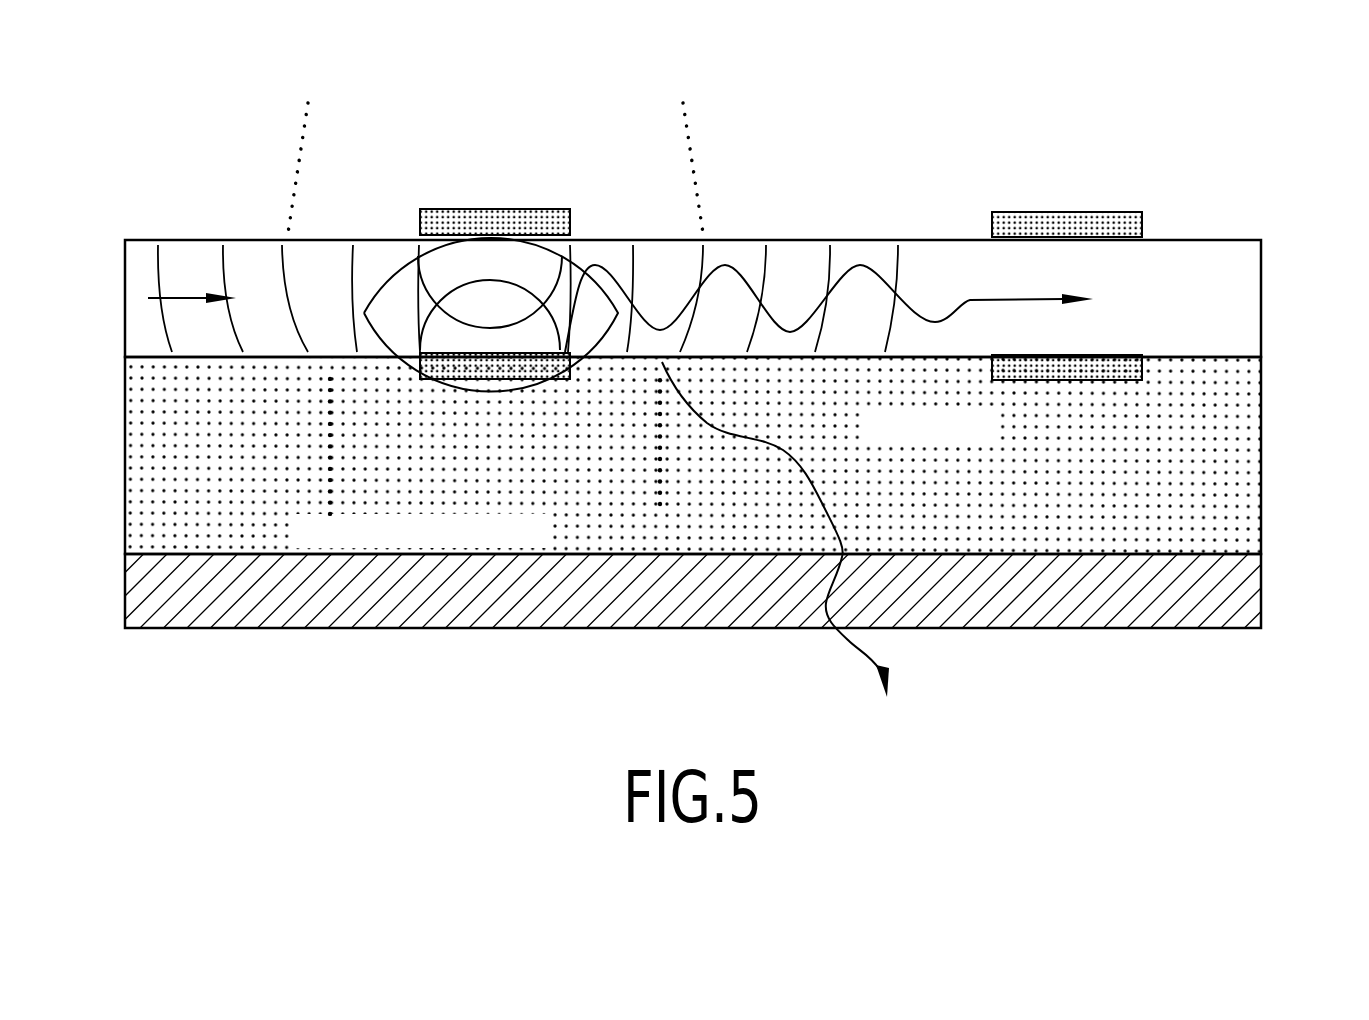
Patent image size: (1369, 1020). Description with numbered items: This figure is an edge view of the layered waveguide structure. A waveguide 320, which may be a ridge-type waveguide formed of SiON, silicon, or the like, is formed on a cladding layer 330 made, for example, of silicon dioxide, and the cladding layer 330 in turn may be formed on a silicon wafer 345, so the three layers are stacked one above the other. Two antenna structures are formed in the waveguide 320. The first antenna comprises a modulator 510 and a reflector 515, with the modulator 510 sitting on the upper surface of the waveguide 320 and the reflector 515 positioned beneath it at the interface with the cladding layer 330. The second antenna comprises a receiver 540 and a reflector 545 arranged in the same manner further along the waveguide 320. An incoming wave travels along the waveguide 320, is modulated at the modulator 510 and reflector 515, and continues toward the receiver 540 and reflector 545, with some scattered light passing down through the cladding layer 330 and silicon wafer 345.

The waveguide 320 is at (1261, 313).
The cladding layer 330 is at (1261, 482).
The silicon wafer 345 is at (480, 610).
The modulator 510 is at (418, 212).
The reflector 515 is at (577, 352).
The receiver 540 is at (1078, 212).
The reflector 545 is at (1105, 355).